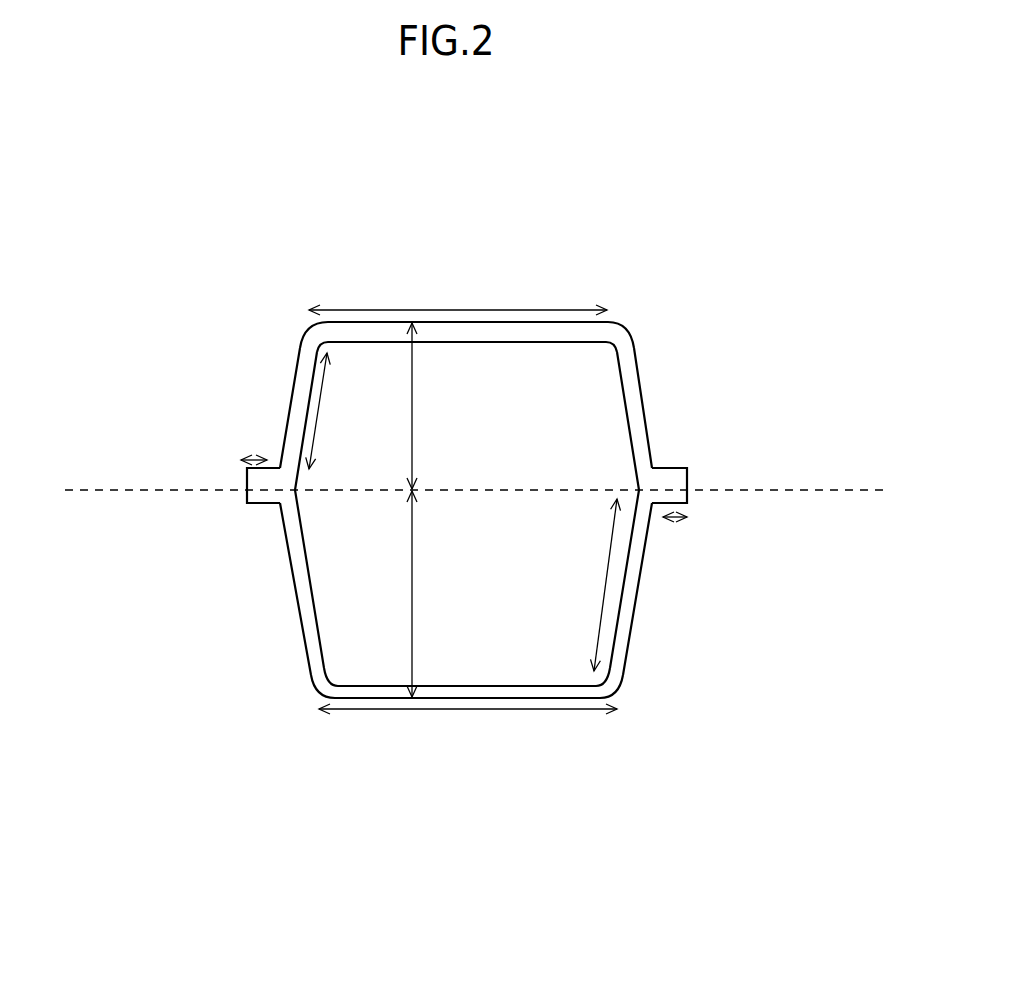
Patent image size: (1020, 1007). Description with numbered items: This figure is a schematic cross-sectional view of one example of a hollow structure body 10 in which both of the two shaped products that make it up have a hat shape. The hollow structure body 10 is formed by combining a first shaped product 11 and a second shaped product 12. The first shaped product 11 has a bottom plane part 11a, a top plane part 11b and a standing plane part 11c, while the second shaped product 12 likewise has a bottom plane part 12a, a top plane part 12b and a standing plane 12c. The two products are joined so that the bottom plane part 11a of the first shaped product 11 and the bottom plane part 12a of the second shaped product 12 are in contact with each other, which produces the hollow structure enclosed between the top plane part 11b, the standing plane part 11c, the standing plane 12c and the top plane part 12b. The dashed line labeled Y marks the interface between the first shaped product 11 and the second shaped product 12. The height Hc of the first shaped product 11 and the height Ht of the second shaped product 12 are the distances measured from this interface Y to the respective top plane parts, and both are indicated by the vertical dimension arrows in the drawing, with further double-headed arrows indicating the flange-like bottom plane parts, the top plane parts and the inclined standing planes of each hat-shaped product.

The hollow structure body 10 is at (592, 270).
The first shaped product 11 is at (158, 204).
The bottom plane part 11a is at (255, 455).
The top plane part 11b is at (358, 309).
The standing plane part 11c is at (313, 365).
The second shaped product 12 is at (567, 830).
The bottom plane part 12a is at (677, 530).
The top plane part 12b is at (543, 712).
The standing plane 12c is at (612, 597).